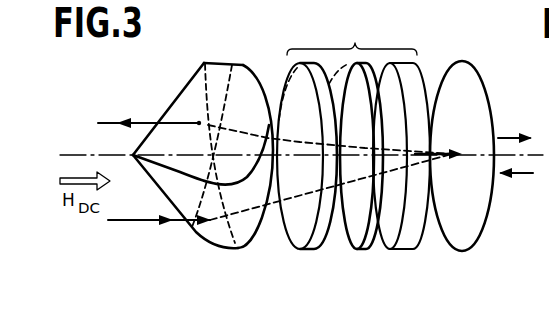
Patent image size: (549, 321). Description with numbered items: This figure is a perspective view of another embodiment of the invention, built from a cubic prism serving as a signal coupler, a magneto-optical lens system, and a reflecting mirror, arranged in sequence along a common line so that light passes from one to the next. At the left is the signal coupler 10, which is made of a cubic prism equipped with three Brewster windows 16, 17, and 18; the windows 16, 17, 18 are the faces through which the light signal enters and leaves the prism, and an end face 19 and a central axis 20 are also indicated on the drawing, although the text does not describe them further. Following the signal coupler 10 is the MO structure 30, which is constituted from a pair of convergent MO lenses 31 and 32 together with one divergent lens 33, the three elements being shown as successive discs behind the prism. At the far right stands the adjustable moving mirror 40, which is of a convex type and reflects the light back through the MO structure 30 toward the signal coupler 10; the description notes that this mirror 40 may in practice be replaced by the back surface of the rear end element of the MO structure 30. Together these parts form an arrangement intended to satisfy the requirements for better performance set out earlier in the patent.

The signal coupler 10 is at (203, 158).
The Brewster window 16 is at (160, 176).
The Brewster window 17 is at (195, 92).
The Brewster window 18 is at (142, 137).
The end face of conical element 19 is at (231, 72).
The optical axis 20 is at (90, 157).
The MO structure 30 is at (356, 44).
The convergent MO lens 31 is at (280, 252).
The convergent MO lens 32 is at (338, 240).
The divergent lens 33 is at (396, 240).
The adjustable moving mirror 40 is at (474, 63).